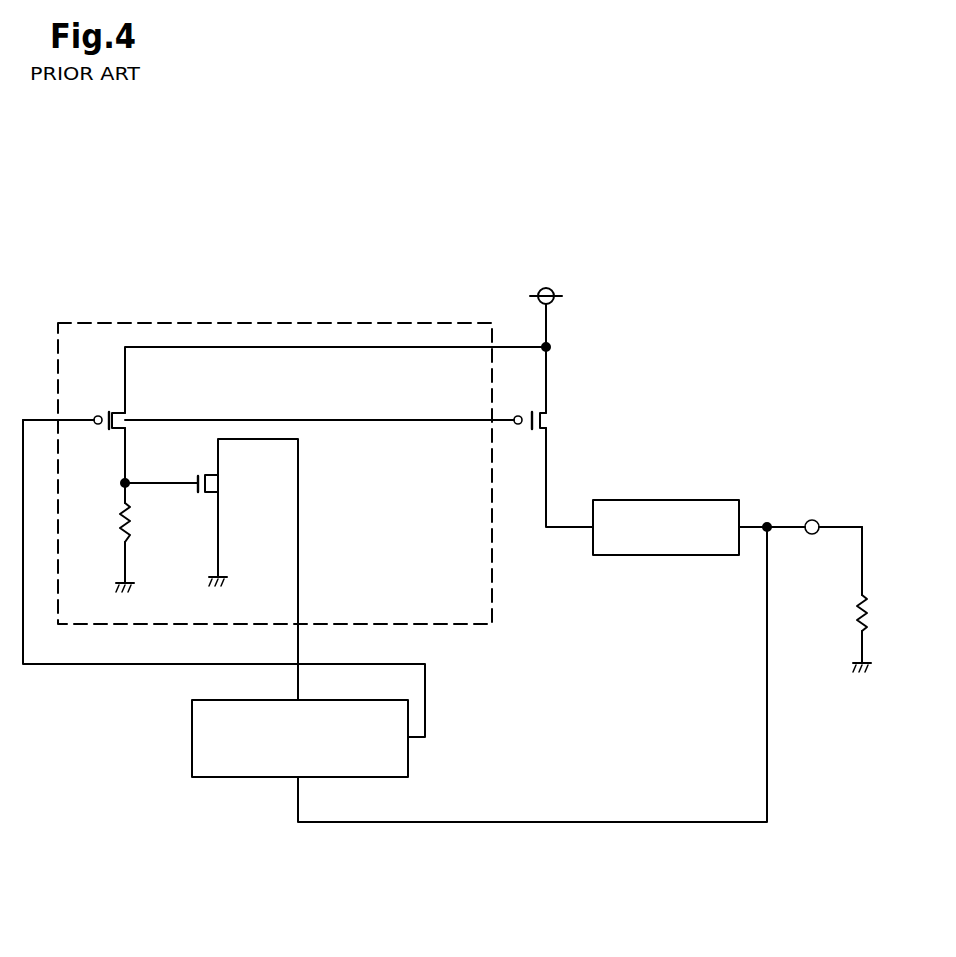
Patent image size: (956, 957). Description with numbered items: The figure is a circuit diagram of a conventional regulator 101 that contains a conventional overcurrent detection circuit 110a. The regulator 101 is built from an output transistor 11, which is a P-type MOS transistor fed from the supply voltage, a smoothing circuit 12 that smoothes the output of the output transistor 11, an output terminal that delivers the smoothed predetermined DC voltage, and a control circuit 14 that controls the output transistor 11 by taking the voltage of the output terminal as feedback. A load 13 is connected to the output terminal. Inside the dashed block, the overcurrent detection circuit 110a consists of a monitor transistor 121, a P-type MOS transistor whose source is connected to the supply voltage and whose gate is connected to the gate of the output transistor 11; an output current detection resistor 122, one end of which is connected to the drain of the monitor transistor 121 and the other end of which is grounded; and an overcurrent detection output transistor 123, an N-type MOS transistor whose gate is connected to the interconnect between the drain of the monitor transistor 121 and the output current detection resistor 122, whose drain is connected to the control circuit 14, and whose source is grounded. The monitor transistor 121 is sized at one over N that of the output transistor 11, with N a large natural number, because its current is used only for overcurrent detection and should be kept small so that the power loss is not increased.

The regulator 101 is at (490, 238).
The overcurrent detection circuit 110a is at (178, 323).
The monitor transistor 121 is at (139, 419).
The output current detection resistor 122 is at (141, 531).
The overcurrent detection output transistor 123 is at (227, 485).
The output transistor 11 is at (560, 421).
The smoothing circuit 12 is at (692, 498).
The load 13 is at (842, 615).
The control circuit 14 is at (418, 766).